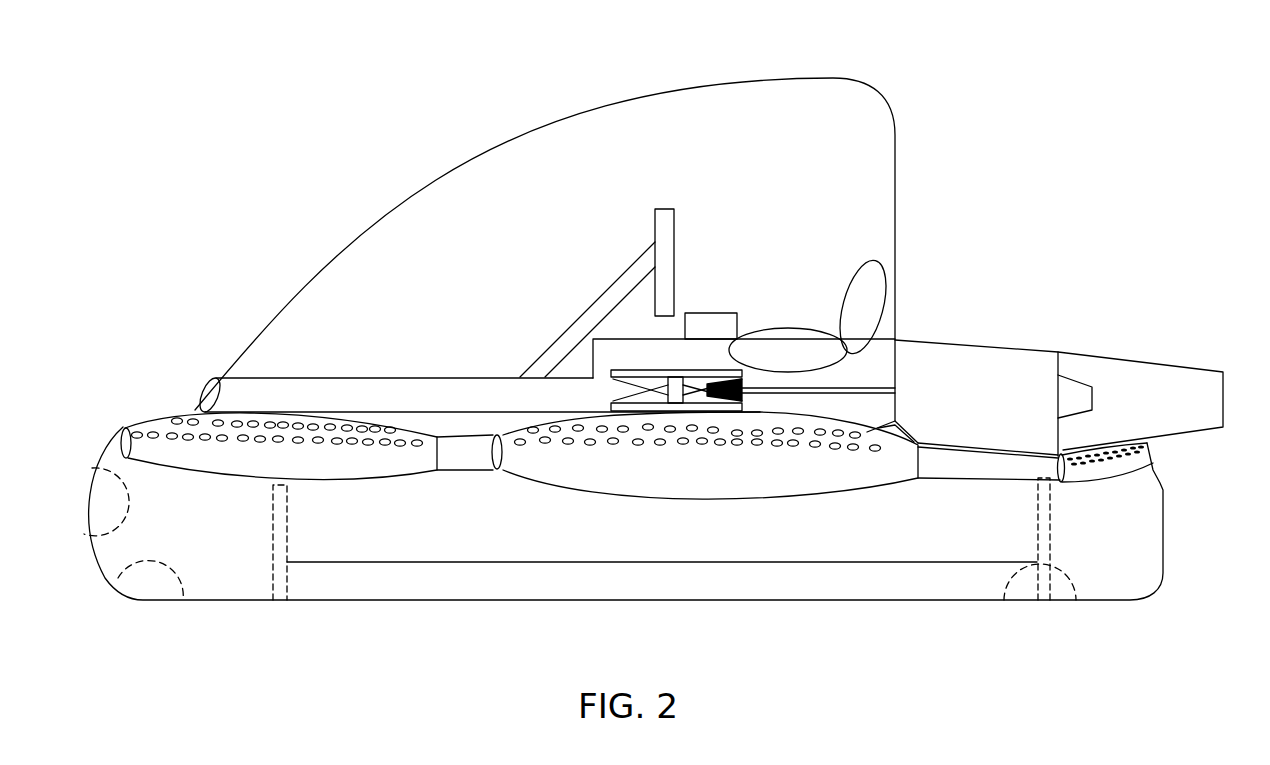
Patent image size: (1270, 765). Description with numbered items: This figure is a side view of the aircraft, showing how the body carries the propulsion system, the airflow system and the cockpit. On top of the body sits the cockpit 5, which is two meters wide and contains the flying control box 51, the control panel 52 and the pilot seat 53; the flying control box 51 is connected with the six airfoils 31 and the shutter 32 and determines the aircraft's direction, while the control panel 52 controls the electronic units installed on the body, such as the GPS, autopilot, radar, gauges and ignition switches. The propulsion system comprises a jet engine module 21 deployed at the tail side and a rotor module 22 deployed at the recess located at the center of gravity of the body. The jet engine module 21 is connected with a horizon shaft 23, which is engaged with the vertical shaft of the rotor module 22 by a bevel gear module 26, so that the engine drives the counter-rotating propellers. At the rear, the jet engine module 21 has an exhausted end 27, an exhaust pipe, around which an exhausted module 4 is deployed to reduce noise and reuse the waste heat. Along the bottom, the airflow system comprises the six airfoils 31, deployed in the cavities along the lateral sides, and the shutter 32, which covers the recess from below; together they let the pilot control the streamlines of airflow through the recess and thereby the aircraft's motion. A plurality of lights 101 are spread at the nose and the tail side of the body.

The cockpit 5 is at (916, 86).
The flying control box 51 is at (712, 312).
The control panel 52 is at (664, 218).
The pilot seat 53 is at (873, 280).
The bevel gear module 26 is at (622, 368).
The horizon shaft 23 is at (857, 386).
The jet engine module 21 is at (1022, 360).
The exhausted end 27 is at (1078, 390).
The exhausted module 4 is at (1207, 413).
The rotor module 22 is at (1012, 522).
The shutter 32 is at (848, 583).
The airfoils 31 is at (160, 423).
The lights 101 is at (102, 485).